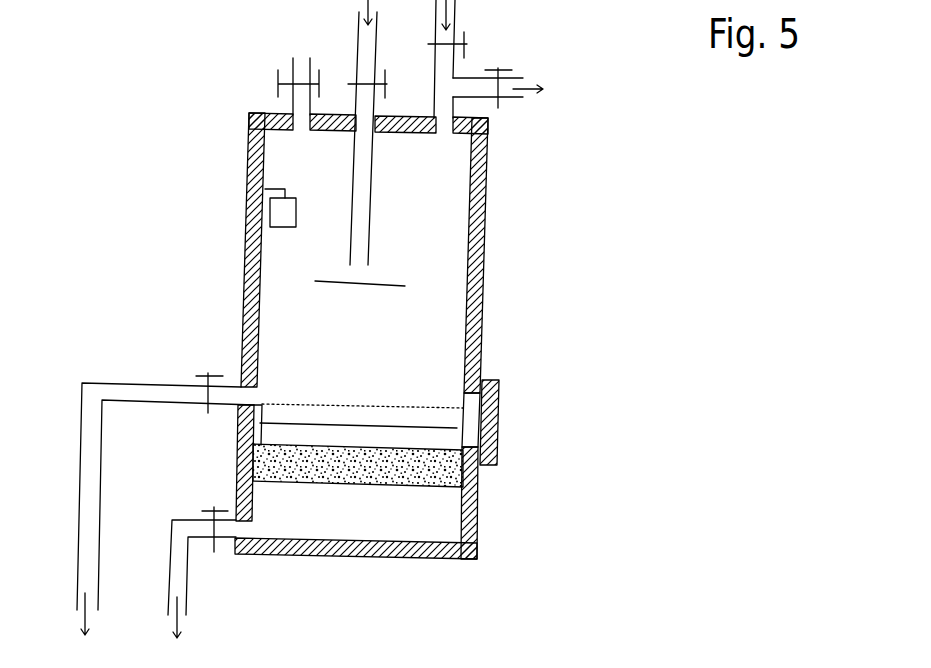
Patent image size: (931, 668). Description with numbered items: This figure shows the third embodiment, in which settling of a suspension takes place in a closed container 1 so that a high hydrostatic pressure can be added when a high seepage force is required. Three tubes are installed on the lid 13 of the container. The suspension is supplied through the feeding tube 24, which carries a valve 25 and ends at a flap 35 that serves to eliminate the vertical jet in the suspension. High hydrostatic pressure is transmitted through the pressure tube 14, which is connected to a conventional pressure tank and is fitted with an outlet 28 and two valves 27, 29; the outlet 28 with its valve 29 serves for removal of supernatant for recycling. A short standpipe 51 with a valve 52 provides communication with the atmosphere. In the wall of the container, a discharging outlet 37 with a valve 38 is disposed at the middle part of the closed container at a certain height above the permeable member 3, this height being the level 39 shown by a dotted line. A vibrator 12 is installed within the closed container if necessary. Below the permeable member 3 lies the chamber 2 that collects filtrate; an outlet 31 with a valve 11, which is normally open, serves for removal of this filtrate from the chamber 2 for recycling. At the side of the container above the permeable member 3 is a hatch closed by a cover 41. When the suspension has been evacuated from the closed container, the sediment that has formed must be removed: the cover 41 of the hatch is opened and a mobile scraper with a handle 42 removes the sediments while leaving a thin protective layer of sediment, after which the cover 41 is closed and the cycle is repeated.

The reaction vessel (upper chamber) 1 is at (448, 304).
The chamber 2 is at (433, 535).
The permeable member 3 is at (475, 475).
The valve 11 is at (213, 503).
The vibrator 12 is at (282, 229).
The lid 13 is at (243, 117).
The pressure tube 14 is at (458, 13).
The feeding tube 24 is at (353, 43).
The valve 25 is at (342, 75).
The valve 27 is at (472, 44).
The outlet 28 is at (520, 105).
The valve 29 is at (502, 113).
The outlet 31 is at (178, 565).
The flap 35 is at (390, 275).
The discharging outlet 37 is at (127, 378).
The valve 38 is at (207, 363).
The level 39 is at (361, 404).
The cover of hatch 41 is at (506, 416).
The handle of mobile scraper 42 is at (412, 423).
The short standpipe 51 is at (287, 107).
The valve 52 is at (268, 82).